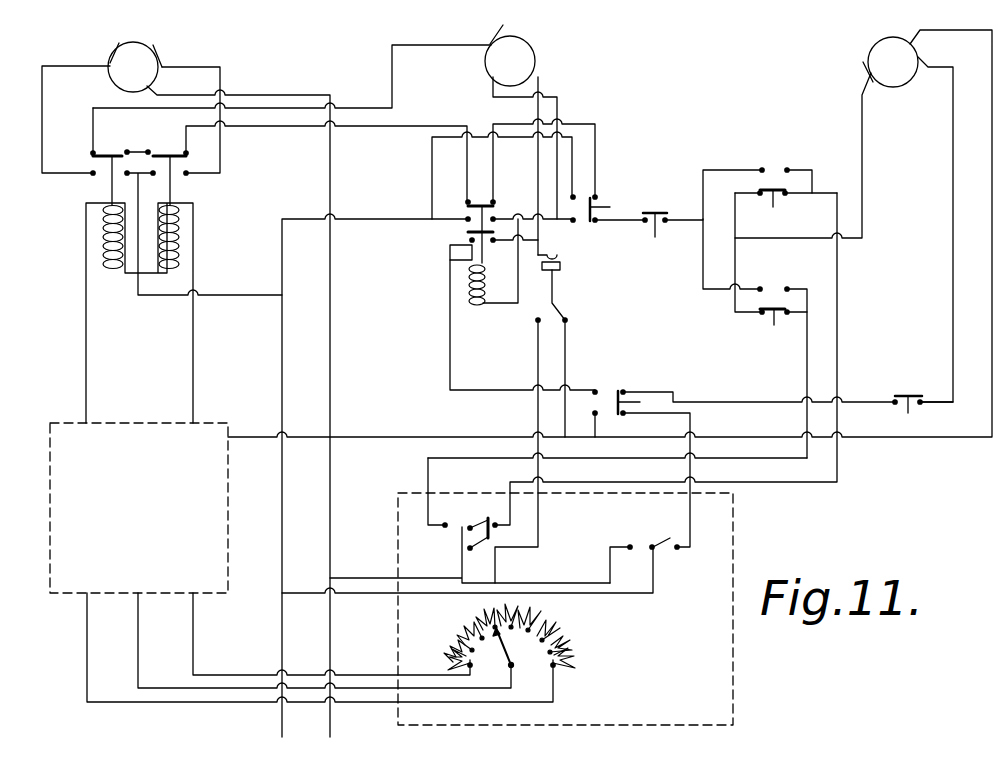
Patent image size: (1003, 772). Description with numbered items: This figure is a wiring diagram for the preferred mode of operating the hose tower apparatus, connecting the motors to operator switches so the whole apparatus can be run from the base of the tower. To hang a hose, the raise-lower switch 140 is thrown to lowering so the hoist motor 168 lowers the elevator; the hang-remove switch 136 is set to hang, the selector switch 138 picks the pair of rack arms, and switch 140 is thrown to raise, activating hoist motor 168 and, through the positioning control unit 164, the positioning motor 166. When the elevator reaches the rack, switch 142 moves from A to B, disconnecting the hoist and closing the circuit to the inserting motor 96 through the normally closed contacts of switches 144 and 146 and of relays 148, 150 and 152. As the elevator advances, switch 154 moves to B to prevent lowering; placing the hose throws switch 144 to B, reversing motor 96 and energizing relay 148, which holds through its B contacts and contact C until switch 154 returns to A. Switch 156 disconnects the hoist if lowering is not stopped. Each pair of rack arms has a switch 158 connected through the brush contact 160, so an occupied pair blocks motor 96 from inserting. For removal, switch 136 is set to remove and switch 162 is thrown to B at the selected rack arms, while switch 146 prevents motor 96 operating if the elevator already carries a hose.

The inserting motor 96 is at (520, 139).
The hang-remove switch 136 is at (470, 520).
The rack arm selector switch 138 is at (537, 637).
The raise-lower switch 140 is at (518, 549).
The elevator position switch 142 is at (617, 325).
The hose placement switch 144 is at (605, 194).
The hose interlock switch 146 is at (702, 203).
The relay 148 is at (496, 292).
The relay 150 is at (307, 195).
The relay 152 is at (288, 234).
The elevator travel switch 154 is at (740, 445).
The lower limit switch 156 is at (915, 388).
The rack arm switch 158 is at (561, 441).
The brush contact 160 is at (578, 283).
The remove position switch 162 is at (732, 156).
The positioning control unit 164 is at (521, 366).
The positioning motor 166 is at (186, 378).
The hoist motor 168 is at (810, 46).